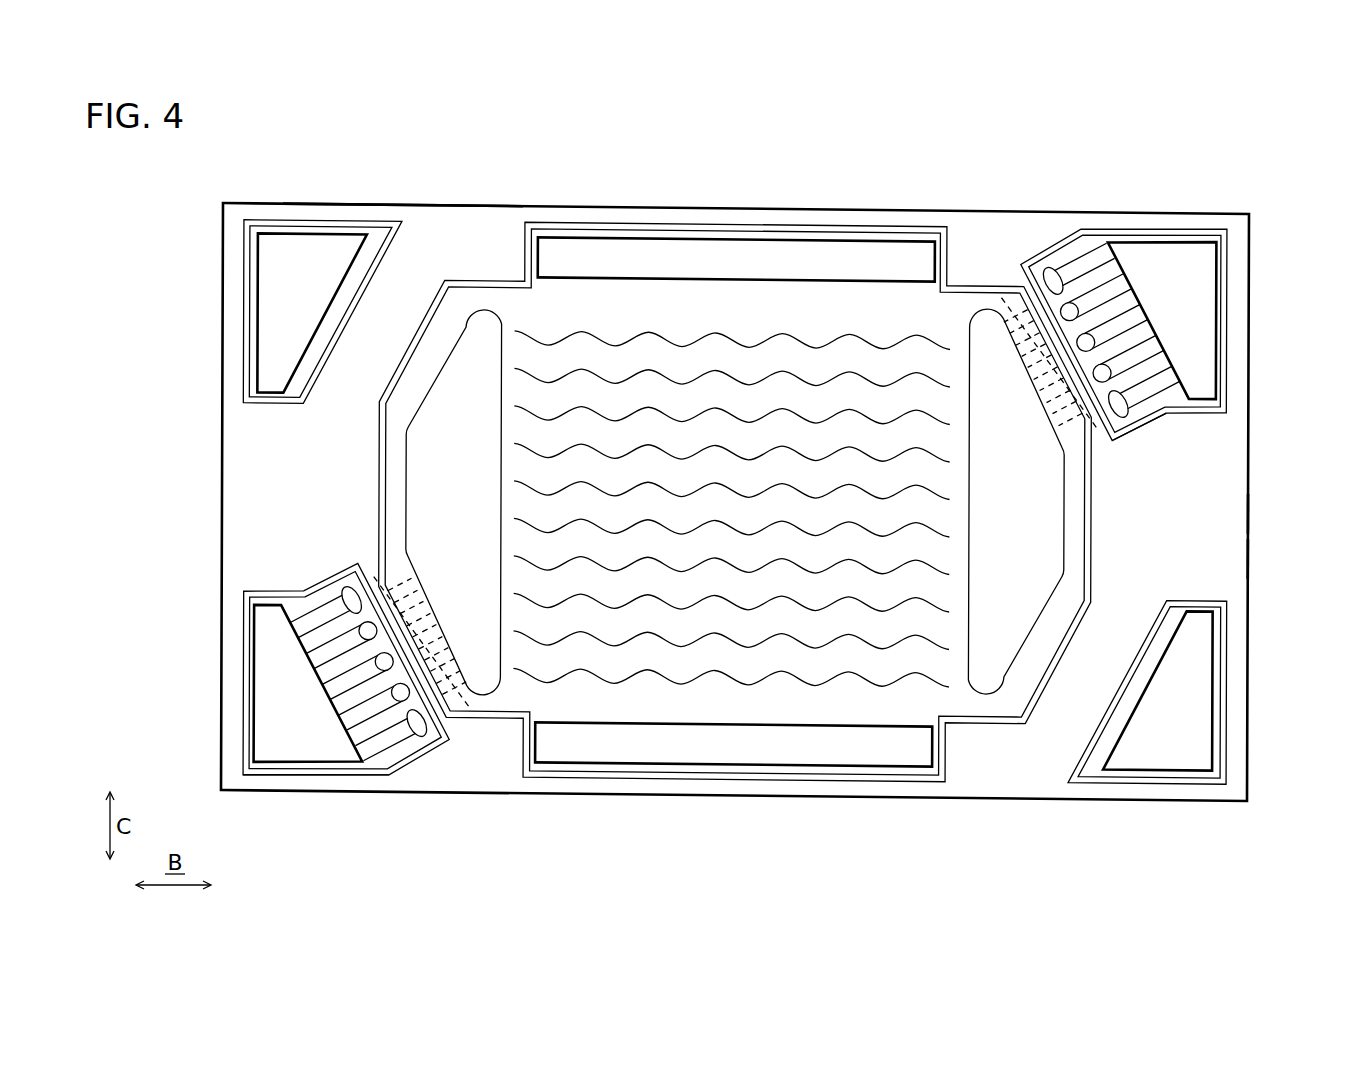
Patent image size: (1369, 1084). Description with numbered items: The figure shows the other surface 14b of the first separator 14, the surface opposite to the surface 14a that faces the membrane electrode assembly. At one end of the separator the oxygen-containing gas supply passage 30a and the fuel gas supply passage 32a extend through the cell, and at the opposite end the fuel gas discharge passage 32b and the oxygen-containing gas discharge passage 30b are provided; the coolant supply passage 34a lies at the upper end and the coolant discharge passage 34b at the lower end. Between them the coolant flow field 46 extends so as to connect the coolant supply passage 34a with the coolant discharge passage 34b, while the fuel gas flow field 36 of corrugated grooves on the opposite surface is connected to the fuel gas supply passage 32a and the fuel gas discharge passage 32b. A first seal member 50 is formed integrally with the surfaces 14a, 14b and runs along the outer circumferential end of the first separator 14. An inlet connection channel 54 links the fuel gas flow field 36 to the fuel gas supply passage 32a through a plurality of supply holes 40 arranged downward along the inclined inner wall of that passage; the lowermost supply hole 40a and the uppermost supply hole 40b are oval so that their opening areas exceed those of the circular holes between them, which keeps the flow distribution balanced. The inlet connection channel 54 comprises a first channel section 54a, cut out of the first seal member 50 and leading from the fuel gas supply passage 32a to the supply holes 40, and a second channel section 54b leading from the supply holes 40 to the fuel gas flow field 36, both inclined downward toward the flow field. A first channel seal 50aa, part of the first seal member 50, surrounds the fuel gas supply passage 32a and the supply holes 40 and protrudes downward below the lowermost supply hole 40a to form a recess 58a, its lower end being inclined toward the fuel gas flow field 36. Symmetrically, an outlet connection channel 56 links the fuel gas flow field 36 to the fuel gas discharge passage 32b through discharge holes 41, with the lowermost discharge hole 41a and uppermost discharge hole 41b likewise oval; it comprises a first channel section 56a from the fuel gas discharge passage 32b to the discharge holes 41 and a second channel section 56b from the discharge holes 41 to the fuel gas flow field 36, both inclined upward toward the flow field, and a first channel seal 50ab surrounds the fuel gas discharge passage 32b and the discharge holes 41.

The first separator 14 is at (709, 476).
The surface of the first separator 14a is at (1277, 514).
The surface of the first separator 14b is at (1277, 559).
The oxygen-containing gas supply passage 30a is at (1188, 693).
The oxygen-containing gas discharge passage 30b is at (279, 312).
The fuel gas supply passage 32a is at (1212, 320).
The fuel gas discharge passage 32b is at (254, 683).
The coolant supply passage 34a is at (736, 222).
The coolant discharge passage 34b is at (733, 784).
The fuel gas flow field 36 is at (622, 135).
The supply holes 40 is at (1117, 275).
The supply hole at the lowermost position 40a is at (1210, 417).
The supply hole at the uppermost position 40b is at (1043, 228).
The discharge holes 41 is at (349, 730).
The discharge hole at the lowermost position 41a is at (426, 778).
The discharge hole at the uppermost position 41b is at (334, 572).
The coolant flow field 46 is at (731, 422).
The first seal member 50 is at (403, 180).
The first channel seal 50aa is at (1177, 446).
The first channel seal 50ab is at (316, 829).
The inlet connection channel 54 is at (1101, 203).
The first channel section 54a is at (1183, 328).
The second channel section 54b is at (1090, 302).
The outlet connection channel 56 is at (371, 741).
The first channel section 56a is at (283, 675).
The second channel section 56b is at (376, 702).
The recess 58a is at (1038, 361).